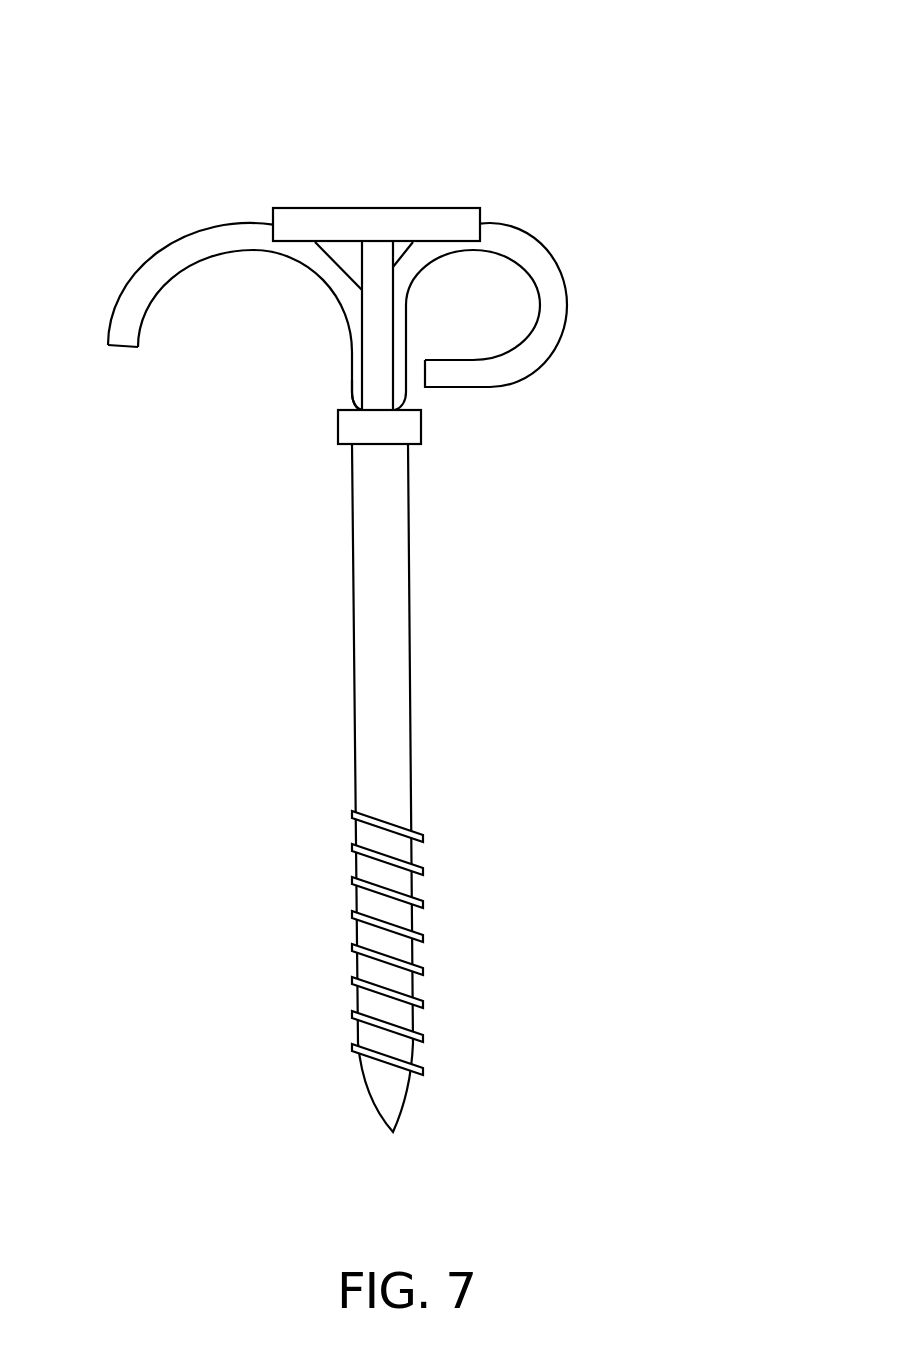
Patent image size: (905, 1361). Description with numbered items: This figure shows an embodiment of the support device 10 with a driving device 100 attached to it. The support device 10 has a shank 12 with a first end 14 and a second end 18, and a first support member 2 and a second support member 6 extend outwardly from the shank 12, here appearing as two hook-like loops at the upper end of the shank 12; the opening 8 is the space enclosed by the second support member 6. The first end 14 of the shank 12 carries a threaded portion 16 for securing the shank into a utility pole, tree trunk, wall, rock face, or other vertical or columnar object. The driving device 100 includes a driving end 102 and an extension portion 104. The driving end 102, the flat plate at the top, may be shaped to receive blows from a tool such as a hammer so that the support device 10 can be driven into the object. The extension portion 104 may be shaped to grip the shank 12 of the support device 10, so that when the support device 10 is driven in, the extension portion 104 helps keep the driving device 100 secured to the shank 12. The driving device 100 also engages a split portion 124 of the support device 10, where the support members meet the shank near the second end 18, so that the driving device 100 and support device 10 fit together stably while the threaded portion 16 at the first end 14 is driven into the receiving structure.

The support device 10 is at (523, 65).
The first support member 2 is at (163, 248).
The second support member 6 is at (519, 316).
The opening of second hook 8 is at (503, 298).
The shank 12 is at (386, 788).
The first end 14 is at (360, 907).
The threaded portion 16 is at (386, 943).
The second end 18 is at (352, 353).
The driving device 100 is at (389, 300).
The driving end 102 is at (425, 207).
The extension portion 104 is at (420, 423).
The split portion 124 is at (348, 255).